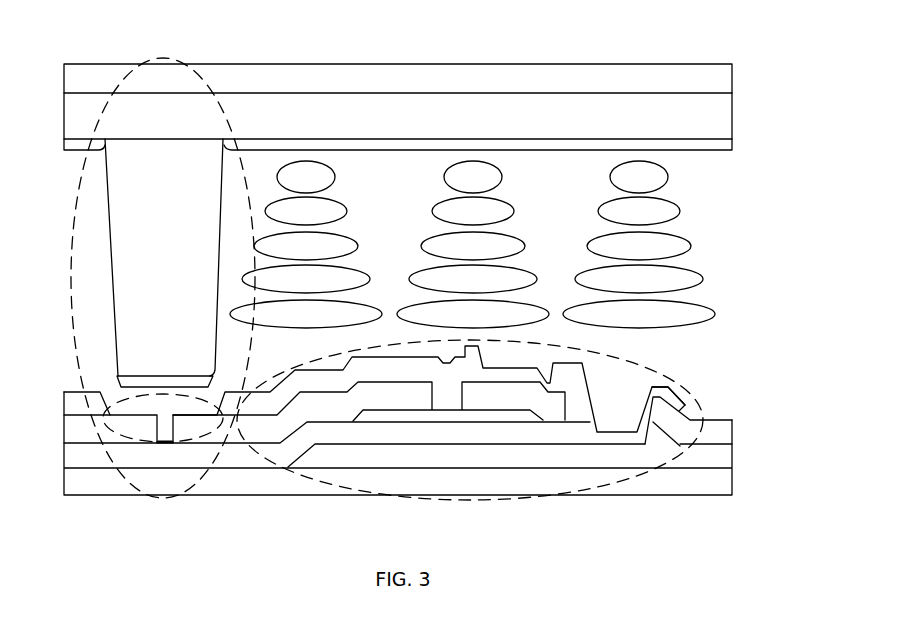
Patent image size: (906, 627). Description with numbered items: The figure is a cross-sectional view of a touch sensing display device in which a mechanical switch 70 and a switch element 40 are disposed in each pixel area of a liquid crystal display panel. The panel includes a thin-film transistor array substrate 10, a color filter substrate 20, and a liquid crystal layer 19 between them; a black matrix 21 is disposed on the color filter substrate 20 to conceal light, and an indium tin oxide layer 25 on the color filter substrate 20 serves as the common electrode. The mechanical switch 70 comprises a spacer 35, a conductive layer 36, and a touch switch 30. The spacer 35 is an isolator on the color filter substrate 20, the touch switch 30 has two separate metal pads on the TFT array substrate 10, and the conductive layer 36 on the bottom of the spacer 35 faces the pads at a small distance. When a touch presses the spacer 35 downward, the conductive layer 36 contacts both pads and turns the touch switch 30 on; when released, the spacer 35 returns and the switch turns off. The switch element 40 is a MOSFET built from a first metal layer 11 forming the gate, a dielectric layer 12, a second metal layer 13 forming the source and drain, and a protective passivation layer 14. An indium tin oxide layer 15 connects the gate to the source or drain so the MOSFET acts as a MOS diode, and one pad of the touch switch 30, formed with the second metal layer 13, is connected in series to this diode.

The thin-film transistor array substrate 10 is at (717, 480).
The first metal layer 11 is at (537, 455).
The dielectric layer 12 is at (82, 460).
The second metal layer 13 is at (82, 437).
The passivation layer 14 is at (78, 405).
The indium tin oxide layer 15 is at (667, 393).
The liquid crystal layer 19 is at (728, 337).
The color filter substrate 20 is at (720, 78).
The black matrix 21 is at (720, 120).
The indium tin oxide layer 25 is at (720, 145).
The touch switch 30 is at (128, 403).
The spacer 35 is at (183, 162).
The conductive layer 36 is at (135, 383).
The switch element 40 is at (480, 505).
The mechanical switch 70 is at (65, 240).